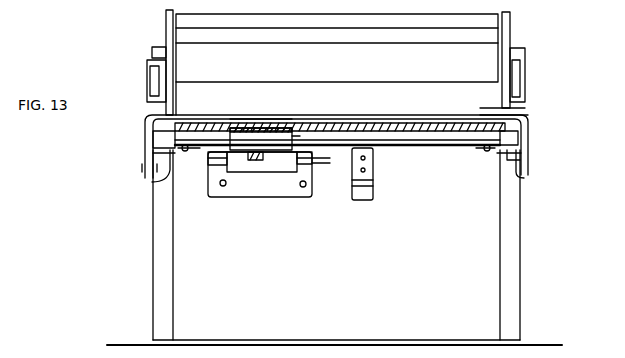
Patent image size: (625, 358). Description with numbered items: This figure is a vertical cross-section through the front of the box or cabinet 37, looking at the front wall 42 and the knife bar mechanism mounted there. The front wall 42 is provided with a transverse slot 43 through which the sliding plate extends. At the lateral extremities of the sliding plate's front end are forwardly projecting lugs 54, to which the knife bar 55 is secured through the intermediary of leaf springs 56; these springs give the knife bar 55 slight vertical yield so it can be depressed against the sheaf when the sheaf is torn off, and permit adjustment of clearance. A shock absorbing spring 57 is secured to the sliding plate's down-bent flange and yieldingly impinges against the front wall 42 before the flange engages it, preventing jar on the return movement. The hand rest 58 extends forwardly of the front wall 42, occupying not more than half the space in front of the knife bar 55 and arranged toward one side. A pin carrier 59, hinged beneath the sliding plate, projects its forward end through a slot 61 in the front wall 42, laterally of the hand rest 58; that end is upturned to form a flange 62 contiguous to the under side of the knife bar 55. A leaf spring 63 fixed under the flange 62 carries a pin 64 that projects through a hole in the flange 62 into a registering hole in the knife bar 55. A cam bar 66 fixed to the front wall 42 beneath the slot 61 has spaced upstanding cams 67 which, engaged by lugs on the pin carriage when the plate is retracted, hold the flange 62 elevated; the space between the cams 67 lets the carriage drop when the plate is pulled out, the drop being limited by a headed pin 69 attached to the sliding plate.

The box or cabinet 37 is at (526, 223).
The front wall 42 is at (478, 268).
The transverse slot 43 is at (418, 148).
The forwardly projecting lugs 54 is at (186, 152).
The knife bar 55 is at (383, 119).
The leaf springs 56 is at (166, 172).
The shock absorbing spring 57 is at (374, 184).
The hand rest 58 is at (432, 119).
The pin carrier 59 is at (300, 136).
The slot 61 is at (312, 165).
The flange 62 is at (247, 127).
The leaf spring 63 is at (254, 135).
The pin 64 is at (284, 118).
The cam bar 66 is at (272, 196).
The upstanding cams 67 is at (217, 166).
The headed pin 69 is at (256, 162).